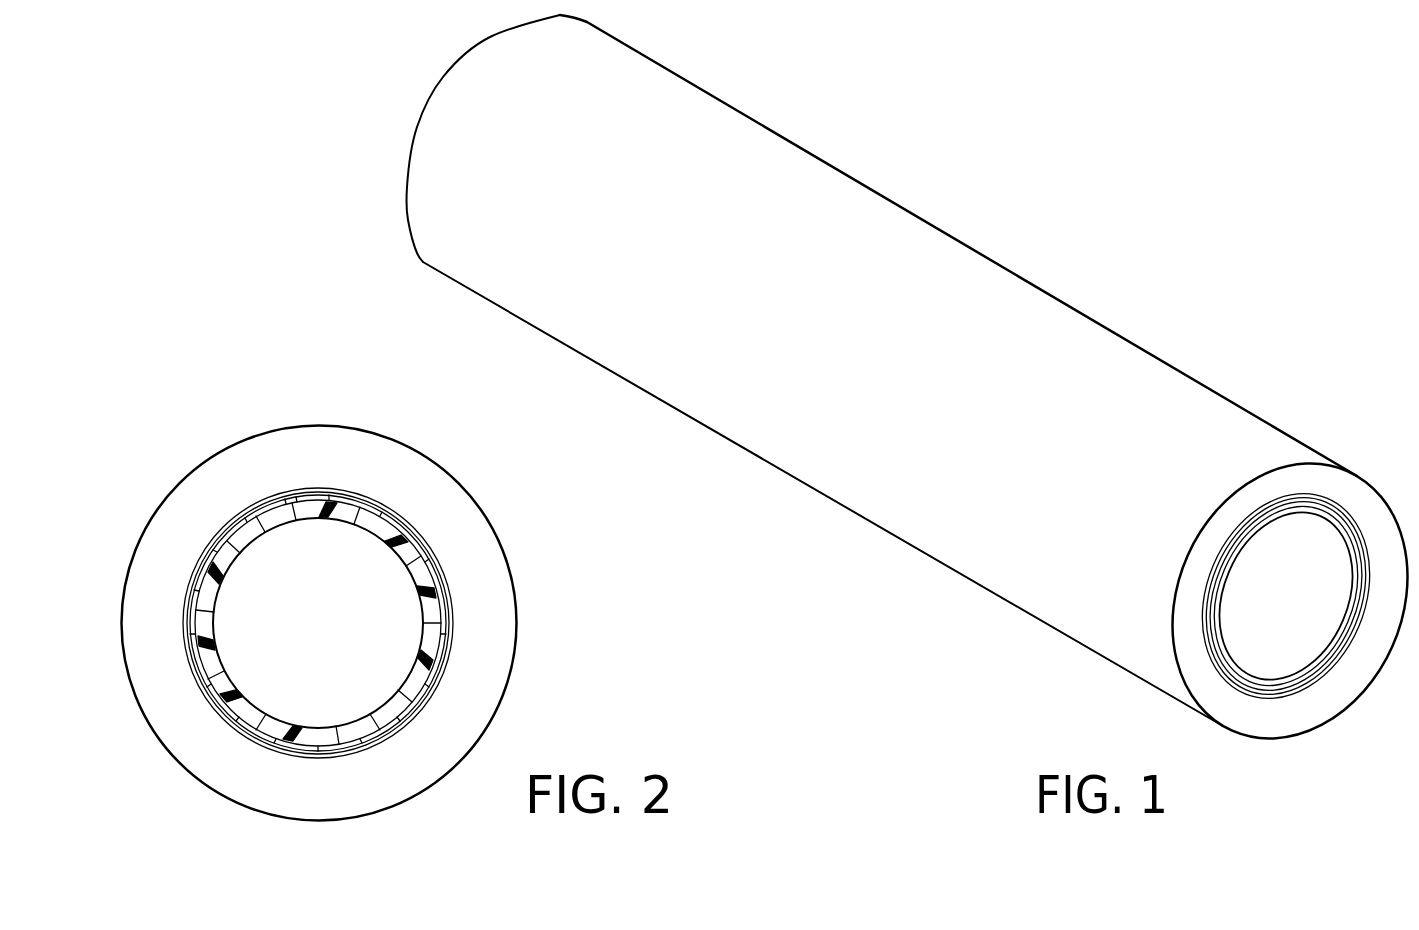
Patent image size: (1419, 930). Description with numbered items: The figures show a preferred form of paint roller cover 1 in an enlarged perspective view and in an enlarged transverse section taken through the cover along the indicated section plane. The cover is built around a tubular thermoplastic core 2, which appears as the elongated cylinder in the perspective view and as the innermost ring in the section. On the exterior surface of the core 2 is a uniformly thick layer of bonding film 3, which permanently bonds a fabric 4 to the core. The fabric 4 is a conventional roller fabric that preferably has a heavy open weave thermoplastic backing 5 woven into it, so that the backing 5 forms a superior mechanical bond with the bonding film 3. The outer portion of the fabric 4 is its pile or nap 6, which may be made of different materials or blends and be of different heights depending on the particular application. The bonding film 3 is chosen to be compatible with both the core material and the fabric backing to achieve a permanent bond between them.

In FIG. 1, the paint roller cover 1 is at (912, 395).
In FIG. 2, the paint roller cover 1 is at (334, 589).
In FIG. 1, the tubular thermoplastic core 2 is at (1222, 642).
In FIG. 2, the tubular thermoplastic core 2 is at (393, 700).
In FIG. 1, the bonding film 3 is at (1210, 668).
In FIG. 2, the bonding film 3 is at (452, 583).
In FIG. 1, the fabric 4 is at (1212, 403).
In FIG. 2, the fabric 4 is at (445, 467).
In FIG. 1, the thermoplastic backing 5 is at (1345, 505).
In FIG. 2, the thermoplastic backing 5 is at (453, 645).
In FIG. 1, the fabric pile 6 is at (1303, 477).
In FIG. 2, the fabric pile 6 is at (453, 513).